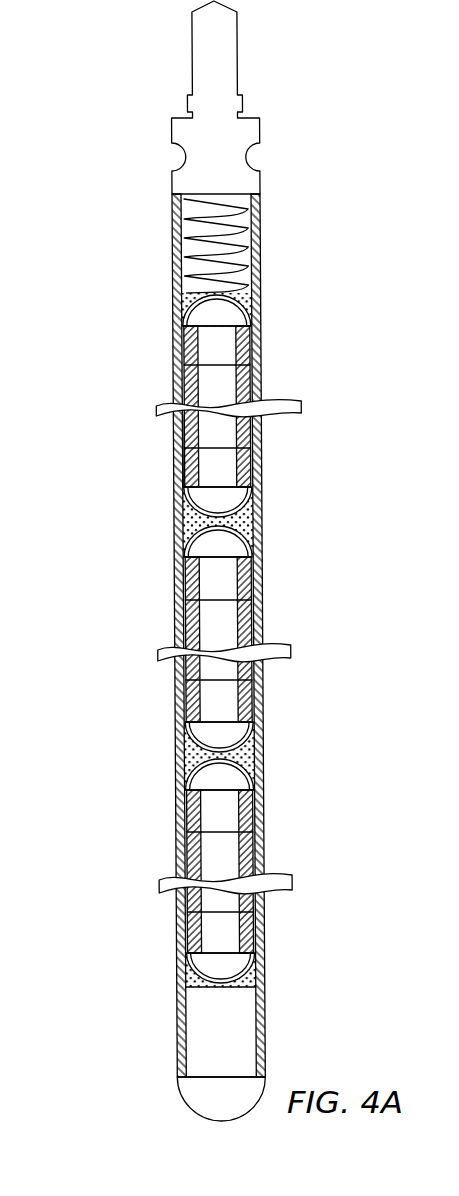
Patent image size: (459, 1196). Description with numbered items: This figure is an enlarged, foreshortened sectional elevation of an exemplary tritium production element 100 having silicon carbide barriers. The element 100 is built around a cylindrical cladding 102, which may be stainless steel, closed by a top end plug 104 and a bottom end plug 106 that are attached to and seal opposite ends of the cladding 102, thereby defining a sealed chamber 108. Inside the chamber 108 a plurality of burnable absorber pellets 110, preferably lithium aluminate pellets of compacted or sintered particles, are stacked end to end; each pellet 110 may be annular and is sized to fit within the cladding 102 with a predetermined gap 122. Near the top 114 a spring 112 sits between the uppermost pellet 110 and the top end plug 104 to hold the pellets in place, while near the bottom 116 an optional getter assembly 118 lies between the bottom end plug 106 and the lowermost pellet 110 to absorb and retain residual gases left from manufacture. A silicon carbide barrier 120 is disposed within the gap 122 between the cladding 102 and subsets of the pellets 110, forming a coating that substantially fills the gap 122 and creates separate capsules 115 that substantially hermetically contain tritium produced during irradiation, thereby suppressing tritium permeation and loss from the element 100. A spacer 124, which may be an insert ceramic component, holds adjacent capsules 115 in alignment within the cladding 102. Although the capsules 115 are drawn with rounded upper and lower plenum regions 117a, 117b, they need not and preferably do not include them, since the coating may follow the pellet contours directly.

The tritium production element 100 is at (313, 184).
The cladding 102 is at (172, 250).
The top end plug 104 is at (185, 152).
The bottom end plug 106 is at (196, 1098).
The sealed chamber 108 is at (256, 408).
The burnable absorber pellets 110 is at (182, 356).
The spring 112 is at (213, 222).
The top 114 is at (86, 298).
The capsules 115 is at (235, 500).
The bottom 116 is at (121, 1006).
The upper plenum region 117a is at (232, 545).
The lower plenum region 117b is at (232, 737).
The getter assembly 118 is at (193, 1036).
The silicon carbide barrier 120 is at (172, 313).
The gap 122 is at (176, 445).
The spacer 124 is at (186, 522).